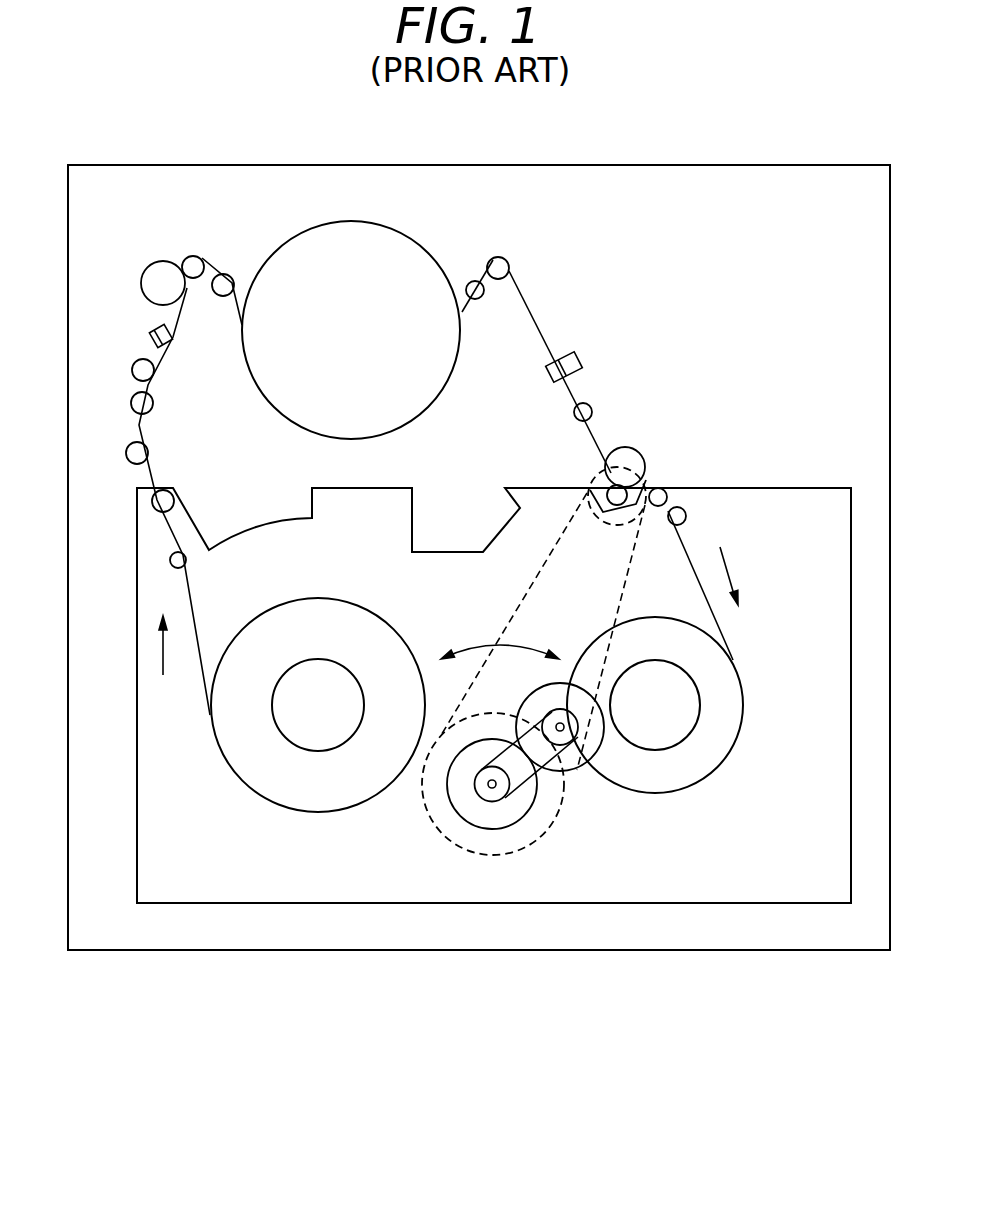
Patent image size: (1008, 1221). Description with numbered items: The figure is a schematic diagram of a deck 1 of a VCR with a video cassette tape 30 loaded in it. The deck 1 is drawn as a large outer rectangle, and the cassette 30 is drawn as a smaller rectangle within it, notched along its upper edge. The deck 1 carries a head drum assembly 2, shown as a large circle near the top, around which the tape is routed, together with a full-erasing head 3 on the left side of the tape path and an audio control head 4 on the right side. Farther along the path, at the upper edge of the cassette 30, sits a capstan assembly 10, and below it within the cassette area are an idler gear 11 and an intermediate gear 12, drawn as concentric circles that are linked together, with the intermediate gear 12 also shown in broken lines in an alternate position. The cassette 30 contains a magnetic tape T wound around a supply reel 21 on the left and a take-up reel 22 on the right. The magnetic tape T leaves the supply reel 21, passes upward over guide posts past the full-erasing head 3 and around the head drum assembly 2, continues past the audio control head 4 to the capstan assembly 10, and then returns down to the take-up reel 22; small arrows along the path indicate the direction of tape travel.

The deck 1 is at (735, 180).
The head drum assembly 2 is at (387, 265).
The full-erasing head 3 is at (158, 336).
The audio control head 4 is at (577, 367).
The magnetic tape T is at (140, 437).
The capstan assembly 10 is at (615, 494).
The idler gear 11 is at (580, 762).
The intermediate gear 12 is at (512, 805).
The supply reel 21 is at (300, 713).
The take-up reel 22 is at (675, 707).
The video cassette tape 30 is at (757, 903).